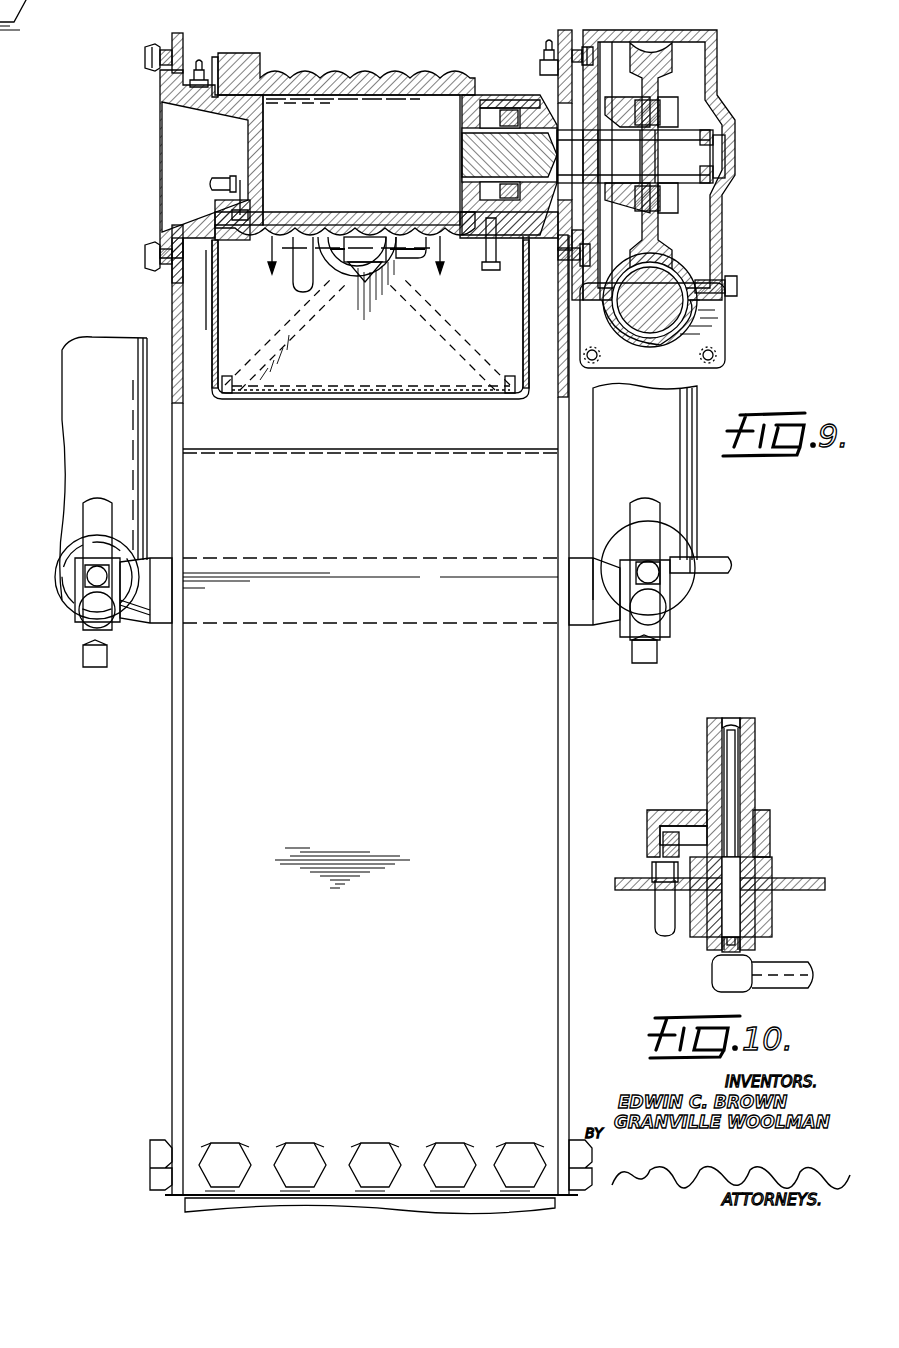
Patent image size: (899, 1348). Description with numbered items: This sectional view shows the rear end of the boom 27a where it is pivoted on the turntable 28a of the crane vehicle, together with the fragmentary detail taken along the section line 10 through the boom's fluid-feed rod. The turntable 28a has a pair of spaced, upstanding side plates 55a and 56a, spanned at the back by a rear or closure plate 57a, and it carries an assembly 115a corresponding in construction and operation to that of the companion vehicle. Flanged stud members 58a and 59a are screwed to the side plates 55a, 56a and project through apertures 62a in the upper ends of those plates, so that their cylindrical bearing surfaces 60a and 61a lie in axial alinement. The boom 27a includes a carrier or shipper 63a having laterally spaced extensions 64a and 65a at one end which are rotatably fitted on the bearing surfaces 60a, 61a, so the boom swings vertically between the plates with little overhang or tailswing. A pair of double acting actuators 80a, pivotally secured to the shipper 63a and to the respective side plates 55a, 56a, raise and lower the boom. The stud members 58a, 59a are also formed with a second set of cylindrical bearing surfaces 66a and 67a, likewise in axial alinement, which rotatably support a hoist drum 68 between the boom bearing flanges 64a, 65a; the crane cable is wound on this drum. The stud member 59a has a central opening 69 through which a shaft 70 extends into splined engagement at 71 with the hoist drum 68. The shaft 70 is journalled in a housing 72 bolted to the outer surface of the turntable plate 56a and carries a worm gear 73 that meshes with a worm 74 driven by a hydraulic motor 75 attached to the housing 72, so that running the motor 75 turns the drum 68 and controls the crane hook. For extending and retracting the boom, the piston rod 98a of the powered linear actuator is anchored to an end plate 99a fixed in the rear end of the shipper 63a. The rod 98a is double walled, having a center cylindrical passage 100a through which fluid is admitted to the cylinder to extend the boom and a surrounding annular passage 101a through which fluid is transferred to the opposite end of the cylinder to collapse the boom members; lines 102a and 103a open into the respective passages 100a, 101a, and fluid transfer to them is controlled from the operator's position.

In FIG. 9, the hoist drum 68 is at (365, 78).
In FIG. 9, the apertures 62a is at (170, 80).
In FIG. 9, the flanged stud member 58a is at (160, 232).
In FIG. 9, the cylindrical bearing surface 60a is at (190, 210).
In FIG. 9, the second cylindrical bearing surface 66a is at (252, 225).
In FIG. 9, the second cylindrical bearing surface 67a is at (480, 222).
In FIG. 9, the splined engagement 71 is at (462, 135).
In FIG. 9, the shaft 70 is at (680, 156).
In FIG. 9, the housing 72 is at (712, 108).
In FIG. 9, the worm gear 73 is at (662, 90).
In FIG. 9, the central opening 69 is at (575, 107).
In FIG. 9, the worm 74 is at (698, 312).
In FIG. 9, the hydraulic motor 75 is at (712, 343).
In FIG. 9, the flanged stud member 59a is at (560, 65).
In FIG. 9, the cylindrical bearing surface 61a is at (575, 230).
In FIG. 9, the extension 65a is at (566, 365).
In FIG. 9, the side plate 56a is at (558, 420).
In FIG. 9, the carrier or shipper 63a is at (315, 402).
In FIG. 9, the extension 64a is at (212, 330).
In FIG. 9, the boom 27a is at (378, 406).
In FIG. 9, the end plate 99a is at (415, 370).
In FIG. 10, the end plate 99a is at (790, 878).
In FIG. 9, the line 103a is at (316, 285).
In FIG. 10, the line 103a is at (656, 910).
In FIG. 9, the line 102a is at (412, 285).
In FIG. 10, the line 102a is at (782, 970).
In FIG. 9, the section line 10 is at (355, 270).
In FIG. 9, the side plate 55a is at (183, 410).
In FIG. 9, the rear or closure plate 57a is at (178, 770).
In FIG. 9, the turntable 28a is at (163, 890).
In FIG. 9, the assembly 115a is at (170, 1196).
In FIG. 9, the double acting actuators 80a is at (100, 360).
In FIG. 10, the piston rod 98a is at (755, 785).
In FIG. 10, the center cylindrical passage 100a is at (735, 742).
In FIG. 10, the annular passage 101a is at (722, 782).